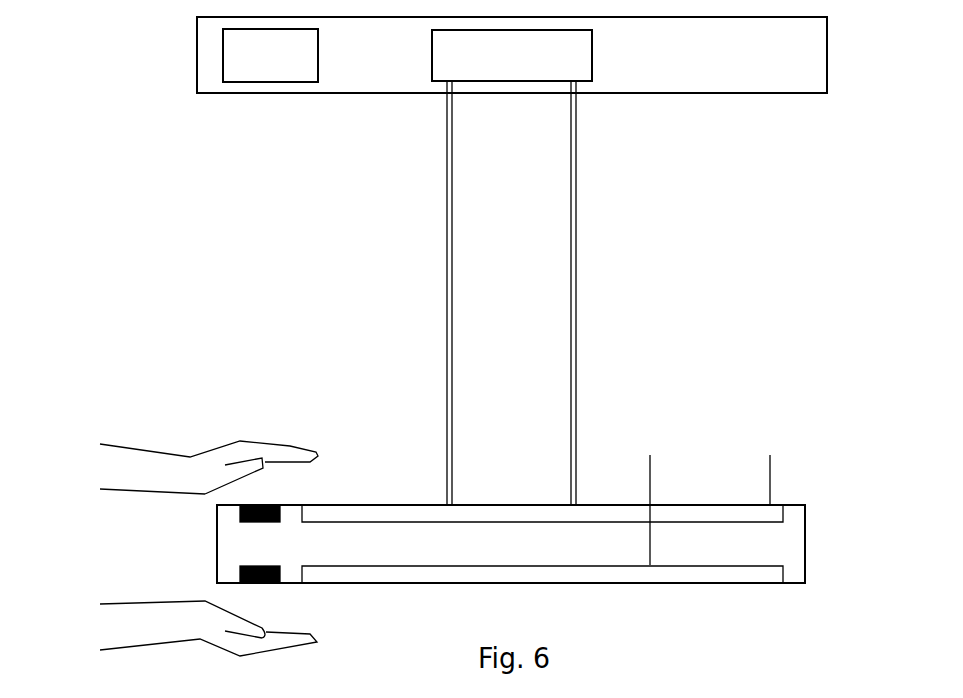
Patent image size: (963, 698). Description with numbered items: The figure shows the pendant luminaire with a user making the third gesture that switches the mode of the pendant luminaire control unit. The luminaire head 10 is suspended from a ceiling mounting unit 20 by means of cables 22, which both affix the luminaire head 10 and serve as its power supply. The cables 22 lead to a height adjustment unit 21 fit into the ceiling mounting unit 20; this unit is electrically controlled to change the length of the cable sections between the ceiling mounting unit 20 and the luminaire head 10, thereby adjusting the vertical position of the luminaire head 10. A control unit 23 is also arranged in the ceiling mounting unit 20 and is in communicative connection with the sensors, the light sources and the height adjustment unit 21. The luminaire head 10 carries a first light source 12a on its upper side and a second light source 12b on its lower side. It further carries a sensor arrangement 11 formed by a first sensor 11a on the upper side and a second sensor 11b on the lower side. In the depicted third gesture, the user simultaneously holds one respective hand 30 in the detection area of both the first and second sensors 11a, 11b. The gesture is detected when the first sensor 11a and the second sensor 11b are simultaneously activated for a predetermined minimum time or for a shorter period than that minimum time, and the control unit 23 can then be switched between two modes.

The luminaire head 10 is at (808, 502).
The sensor arrangement 11 is at (70, 498).
The first sensor 11a is at (217, 513).
The second sensor 11b is at (217, 572).
The first light source 12a is at (770, 455).
The second light source 12b is at (650, 455).
The ceiling mounting unit 20 is at (827, 55).
The height adjustment unit 21 is at (512, 55).
The cables 22 is at (452, 262).
The control unit 23 is at (270, 55).
The hand 30 is at (243, 440).